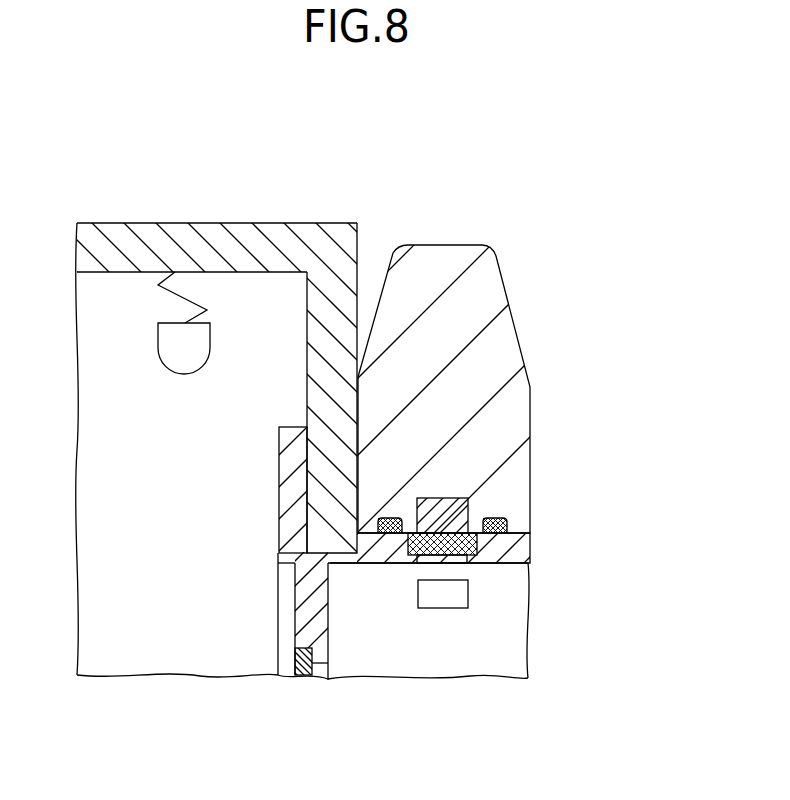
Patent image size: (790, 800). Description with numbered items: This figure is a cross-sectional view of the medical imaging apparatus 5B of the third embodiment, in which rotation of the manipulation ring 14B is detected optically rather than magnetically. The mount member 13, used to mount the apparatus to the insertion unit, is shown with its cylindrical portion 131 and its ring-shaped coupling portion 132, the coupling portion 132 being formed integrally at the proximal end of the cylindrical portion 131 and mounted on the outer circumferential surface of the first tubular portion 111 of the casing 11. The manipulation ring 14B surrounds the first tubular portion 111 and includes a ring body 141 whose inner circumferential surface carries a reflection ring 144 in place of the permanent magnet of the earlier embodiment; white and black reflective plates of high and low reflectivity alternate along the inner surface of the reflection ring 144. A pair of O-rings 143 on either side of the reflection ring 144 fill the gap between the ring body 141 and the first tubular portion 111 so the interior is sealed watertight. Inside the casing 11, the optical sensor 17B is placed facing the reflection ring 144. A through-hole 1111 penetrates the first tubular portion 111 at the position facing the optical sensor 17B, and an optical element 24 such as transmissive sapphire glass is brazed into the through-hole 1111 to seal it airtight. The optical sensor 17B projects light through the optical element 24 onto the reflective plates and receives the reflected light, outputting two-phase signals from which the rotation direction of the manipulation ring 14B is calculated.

The mount member 13 is at (270, 180).
The cylindrical portion 131 is at (165, 240).
The coupling portion 132 is at (312, 335).
The medical imaging apparatus 5B is at (605, 151).
The manipulation ring 14B is at (358, 180).
The ring body 141 is at (487, 287).
The O-rings 143 is at (388, 518).
The reflection ring 144 is at (437, 498).
The first tubular portion 111 is at (508, 534).
The casing 11 is at (438, 589).
The through-hole 1111 is at (420, 563).
The optical element 24 is at (460, 563).
The optical sensor 17B is at (445, 608).